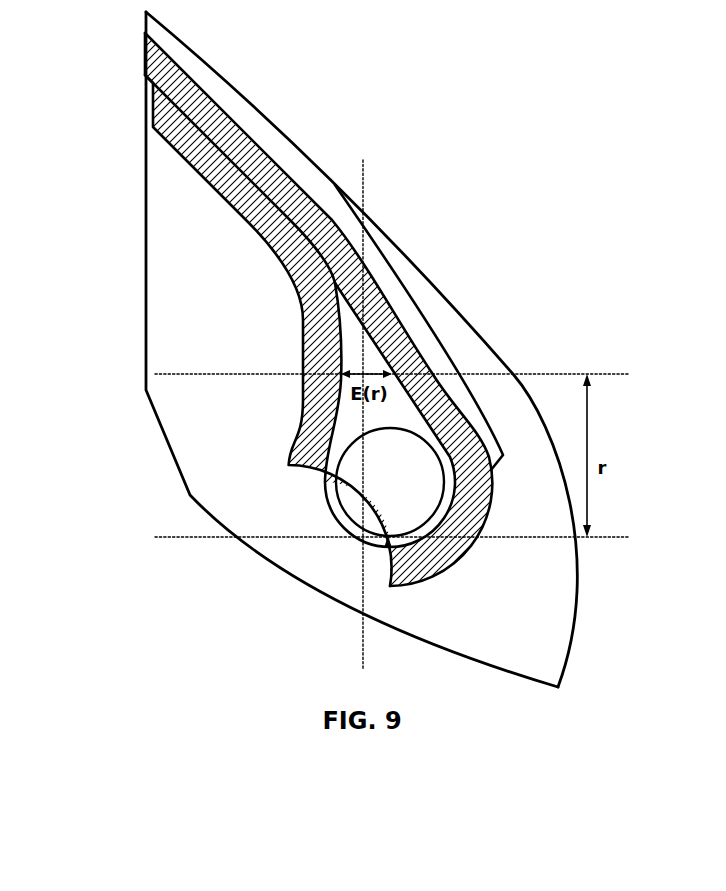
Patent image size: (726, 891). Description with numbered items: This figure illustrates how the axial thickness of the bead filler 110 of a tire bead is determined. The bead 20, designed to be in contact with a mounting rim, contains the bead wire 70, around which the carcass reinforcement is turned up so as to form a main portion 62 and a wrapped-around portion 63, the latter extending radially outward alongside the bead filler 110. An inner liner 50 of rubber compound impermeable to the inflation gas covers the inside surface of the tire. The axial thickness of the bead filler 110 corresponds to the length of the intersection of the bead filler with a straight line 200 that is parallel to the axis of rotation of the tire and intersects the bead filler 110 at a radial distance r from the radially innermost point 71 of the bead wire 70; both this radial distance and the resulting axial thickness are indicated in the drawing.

The bead 20 is at (185, 334).
The inner liner 50 is at (425, 343).
The main portion 62 is at (233, 135).
The wrapped-around portion 63 is at (250, 200).
The bead wire 70 is at (376, 493).
The radially innermost point 71 is at (388, 545).
The bead filler 110 is at (323, 410).
The straight line 200 is at (527, 372).